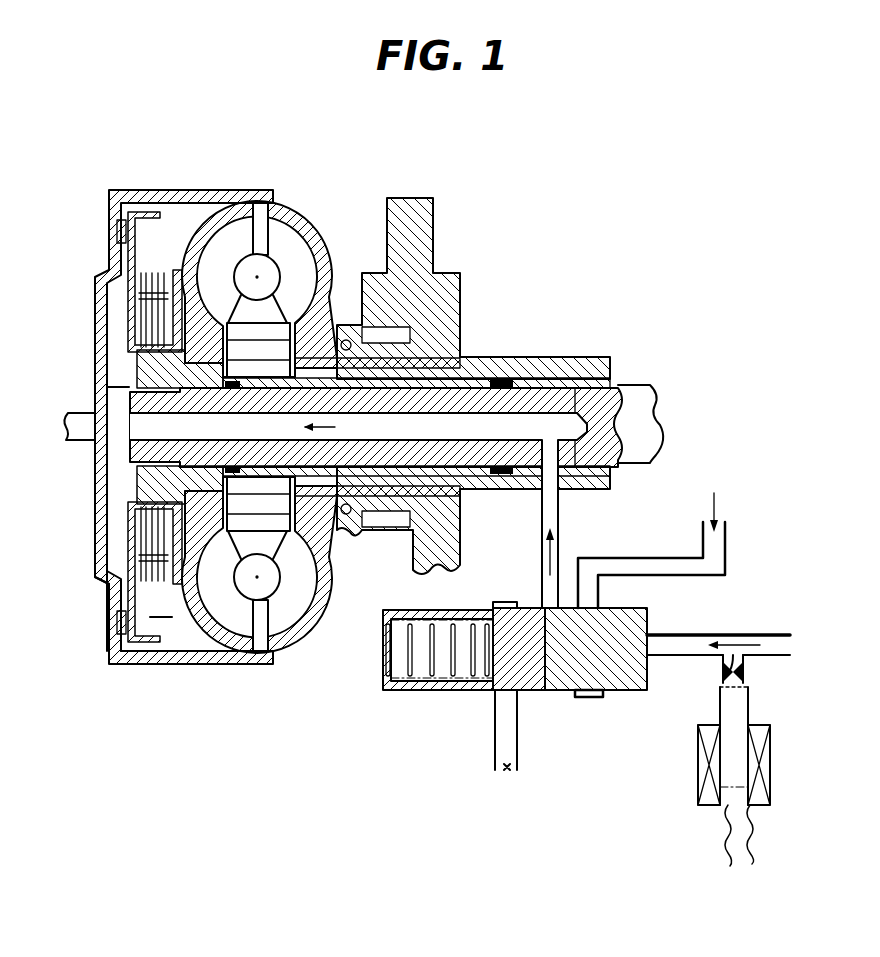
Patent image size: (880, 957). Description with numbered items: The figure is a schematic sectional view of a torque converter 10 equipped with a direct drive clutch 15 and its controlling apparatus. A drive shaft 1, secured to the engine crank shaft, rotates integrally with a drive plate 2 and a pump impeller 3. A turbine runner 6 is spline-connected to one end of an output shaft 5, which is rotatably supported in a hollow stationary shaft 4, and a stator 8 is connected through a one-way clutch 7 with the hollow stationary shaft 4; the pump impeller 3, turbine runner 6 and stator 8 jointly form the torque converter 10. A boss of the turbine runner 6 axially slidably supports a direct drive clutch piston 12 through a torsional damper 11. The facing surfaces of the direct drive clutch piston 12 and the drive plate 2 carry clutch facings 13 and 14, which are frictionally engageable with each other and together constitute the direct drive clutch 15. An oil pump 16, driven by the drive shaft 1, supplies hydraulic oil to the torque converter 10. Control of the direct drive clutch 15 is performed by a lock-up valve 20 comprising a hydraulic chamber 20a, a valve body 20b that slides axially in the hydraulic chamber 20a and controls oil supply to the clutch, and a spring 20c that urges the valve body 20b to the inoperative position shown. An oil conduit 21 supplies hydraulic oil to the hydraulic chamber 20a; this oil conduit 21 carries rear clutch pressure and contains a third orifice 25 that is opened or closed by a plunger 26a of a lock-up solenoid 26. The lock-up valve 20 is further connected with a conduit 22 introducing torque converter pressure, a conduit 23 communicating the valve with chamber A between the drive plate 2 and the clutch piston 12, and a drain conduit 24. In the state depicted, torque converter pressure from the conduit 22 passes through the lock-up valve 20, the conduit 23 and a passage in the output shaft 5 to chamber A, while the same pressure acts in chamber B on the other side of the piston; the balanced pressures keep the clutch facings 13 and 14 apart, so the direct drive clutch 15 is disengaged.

The drive shaft 1 is at (62, 417).
The drive plate 2 is at (97, 285).
The pump impeller 3 is at (290, 238).
The hollow stationary shaft 4 is at (318, 478).
The output shaft 5 is at (482, 405).
The turbine runner 6 is at (227, 240).
The one-way clutch 7 is at (280, 348).
The stator 8 is at (266, 306).
The torque converter 10 is at (362, 423).
The torsional damper 11 is at (160, 268).
The direct drive clutch piston 12 is at (128, 520).
The clutch facing 13 is at (105, 590).
The clutch facing 14 is at (110, 648).
The direct drive clutch 15 is at (133, 648).
The oil pump 16 is at (404, 335).
The lock-up valve 20 is at (491, 692).
The hydraulic chamber 20a is at (646, 694).
The valve body 20b is at (565, 672).
The spring 20c is at (410, 623).
The oil conduit 21 is at (668, 635).
The conduit 22 is at (628, 558).
The conduit 23 is at (542, 560).
The drain conduit 24 is at (518, 737).
The third orifice 25 is at (745, 668).
The lock-up solenoid 26 is at (703, 768).
The plunger 26a is at (730, 708).